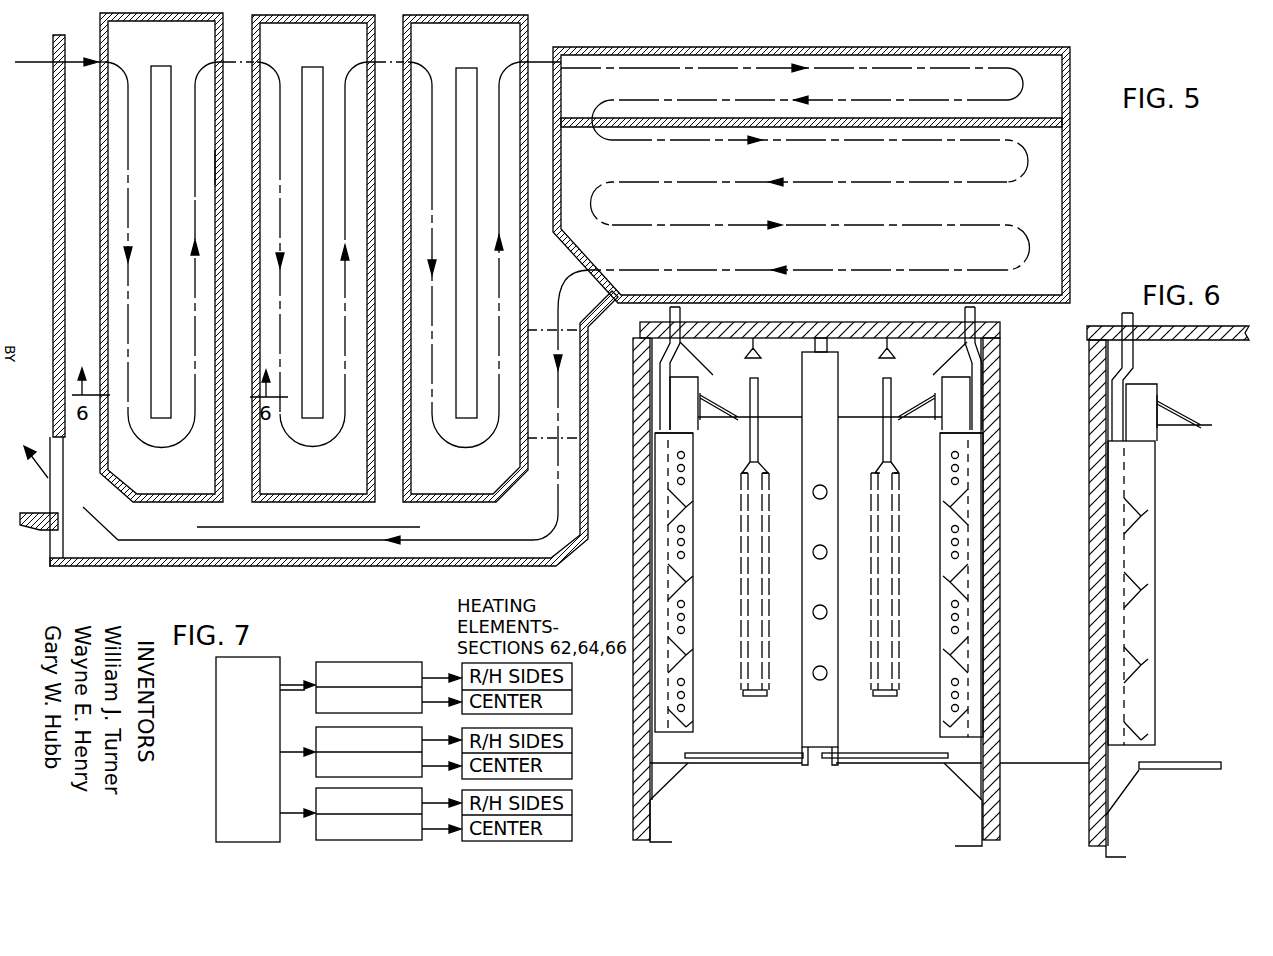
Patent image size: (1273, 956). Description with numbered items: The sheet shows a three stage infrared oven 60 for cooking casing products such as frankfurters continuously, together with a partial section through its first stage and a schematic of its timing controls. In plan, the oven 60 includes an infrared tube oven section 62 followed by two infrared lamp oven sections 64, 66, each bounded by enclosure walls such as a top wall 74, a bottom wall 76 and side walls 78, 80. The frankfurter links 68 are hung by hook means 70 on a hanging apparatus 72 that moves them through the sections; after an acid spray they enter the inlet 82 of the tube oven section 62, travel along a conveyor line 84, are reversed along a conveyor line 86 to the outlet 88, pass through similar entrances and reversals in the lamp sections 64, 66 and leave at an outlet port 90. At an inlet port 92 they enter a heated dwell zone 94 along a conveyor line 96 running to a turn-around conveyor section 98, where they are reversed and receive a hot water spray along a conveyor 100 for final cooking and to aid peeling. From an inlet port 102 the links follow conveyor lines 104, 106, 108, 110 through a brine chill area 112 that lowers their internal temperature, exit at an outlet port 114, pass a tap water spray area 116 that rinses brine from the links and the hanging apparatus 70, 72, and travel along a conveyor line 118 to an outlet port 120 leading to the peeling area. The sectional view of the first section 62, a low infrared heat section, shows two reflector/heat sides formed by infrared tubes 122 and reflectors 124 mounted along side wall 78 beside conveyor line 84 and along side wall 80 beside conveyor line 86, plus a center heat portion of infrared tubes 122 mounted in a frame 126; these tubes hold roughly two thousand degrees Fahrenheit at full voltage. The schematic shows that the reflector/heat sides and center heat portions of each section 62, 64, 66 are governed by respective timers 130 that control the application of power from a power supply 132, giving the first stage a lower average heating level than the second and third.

In FIG. 5, the three stage infrared oven 60 is at (319, 429).
In FIG. 5, the infrared tube oven section 62 is at (175, 53).
In FIG. 6, the infrared tube oven section 62 is at (745, 731).
In FIG. 5, the infrared lamp oven section 64 is at (321, 53).
In FIG. 5, the infrared lamp oven section 66 is at (470, 53).
In FIG. 6, the frankfurter links 68 is at (768, 681).
In FIG. 6, the hook means 70 is at (761, 470).
In FIG. 6, the hanging apparatus 72 is at (750, 433).
In FIG. 6, the top wall 74 is at (944, 319).
In FIG. 6, the bottom wall 76 is at (733, 758).
In FIG. 5, the side wall 78 is at (103, 175).
In FIG. 6, the side wall 78 is at (636, 568).
In FIG. 5, the side wall 80 is at (213, 165).
In FIG. 6, the side wall 80 is at (1000, 566).
In FIG. 5, the inlet 82 is at (127, 68).
In FIG. 5, the conveyor line 84 is at (123, 335).
In FIG. 5, the conveyor line 86 is at (196, 302).
In FIG. 5, the outlet 88 is at (194, 78).
In FIG. 5, the outlet port 90 is at (499, 76).
In FIG. 5, the inlet port 92 is at (578, 66).
In FIG. 5, the heated dwell zone 94 is at (728, 66).
In FIG. 5, the conveyor line 96 is at (828, 70).
In FIG. 5, the turn-around conveyor section 98 is at (1022, 84).
In FIG. 5, the conveyor 100 is at (897, 101).
In FIG. 5, the inlet port 102 is at (598, 133).
In FIG. 5, the conveyor line 104 is at (828, 145).
In FIG. 5, the conveyor line 106 is at (787, 183).
In FIG. 5, the conveyor line 108 is at (837, 230).
In FIG. 5, the conveyor line 110 is at (670, 271).
In FIG. 5, the brine chill area 112 is at (1046, 210).
In FIG. 5, the outlet port 114 is at (627, 245).
In FIG. 5, the tap water spray area 116 is at (568, 412).
In FIG. 5, the conveyor line 118 is at (230, 545).
In FIG. 5, the outlet port 120 is at (68, 492).
In FIG. 6, the infrared tubes 122 is at (822, 484).
In FIG. 6, the reflectors 124 is at (680, 484).
In FIG. 6, the frame 126 is at (830, 412).
In FIG. 7, the timers 130 is at (353, 726).
In FIG. 7, the power supply 132 is at (215, 676).